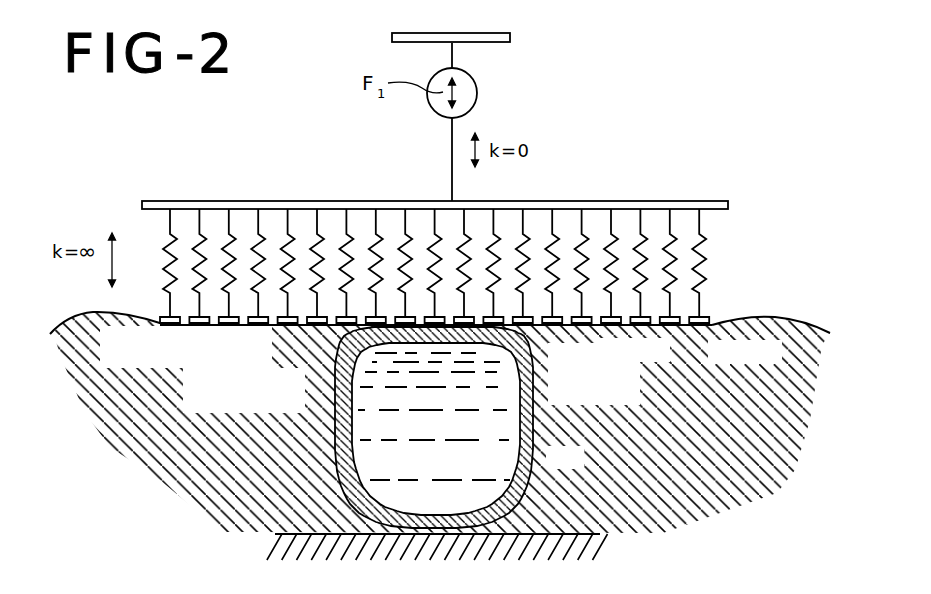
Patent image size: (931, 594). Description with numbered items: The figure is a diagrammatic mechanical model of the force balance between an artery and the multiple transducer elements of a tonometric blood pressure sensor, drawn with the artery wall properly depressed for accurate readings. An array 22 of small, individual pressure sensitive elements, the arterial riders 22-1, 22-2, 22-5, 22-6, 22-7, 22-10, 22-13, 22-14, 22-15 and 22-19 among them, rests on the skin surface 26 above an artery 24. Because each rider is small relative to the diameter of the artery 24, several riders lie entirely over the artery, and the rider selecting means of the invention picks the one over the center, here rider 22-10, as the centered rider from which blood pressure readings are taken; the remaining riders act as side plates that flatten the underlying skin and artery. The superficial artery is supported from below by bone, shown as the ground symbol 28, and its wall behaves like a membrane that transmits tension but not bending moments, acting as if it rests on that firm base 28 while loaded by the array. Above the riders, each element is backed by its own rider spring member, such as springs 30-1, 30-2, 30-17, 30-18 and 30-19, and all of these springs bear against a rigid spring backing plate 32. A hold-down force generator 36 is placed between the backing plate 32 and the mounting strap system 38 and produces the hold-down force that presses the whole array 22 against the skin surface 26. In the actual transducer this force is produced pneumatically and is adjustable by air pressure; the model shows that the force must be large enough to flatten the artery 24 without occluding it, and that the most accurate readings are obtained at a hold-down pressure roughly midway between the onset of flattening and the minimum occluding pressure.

The array of pressure sensitive transducer elements 22 is at (99, 287).
The arterial rider 22-1 is at (160, 318).
The arterial rider 22-2 is at (190, 324).
The arterial rider 22-5 is at (285, 324).
The arterial rider 22-6 is at (305, 324).
The arterial rider 22-7 is at (337, 324).
The centered rider 22-10 is at (433, 317).
The arterial rider 22-13 is at (530, 324).
The arterial rider 22-14 is at (553, 324).
The arterial rider 22-15 is at (583, 324).
The arterial rider 22-19 is at (698, 325).
The artery 24 is at (535, 448).
The skin surface 26 is at (775, 318).
The ground symbol (firm base) 28 is at (278, 534).
The rider spring member 30-1 is at (167, 250).
The rider spring member 30-2 is at (197, 245).
The rider spring member 30-17 is at (648, 246).
The rider spring member 30-18 is at (672, 266).
The rider spring member 30-19 is at (700, 278).
The rigid spring backing plate 32 is at (710, 202).
The hold-down force generator 36 is at (474, 86).
The mounting strap system 38 is at (511, 42).